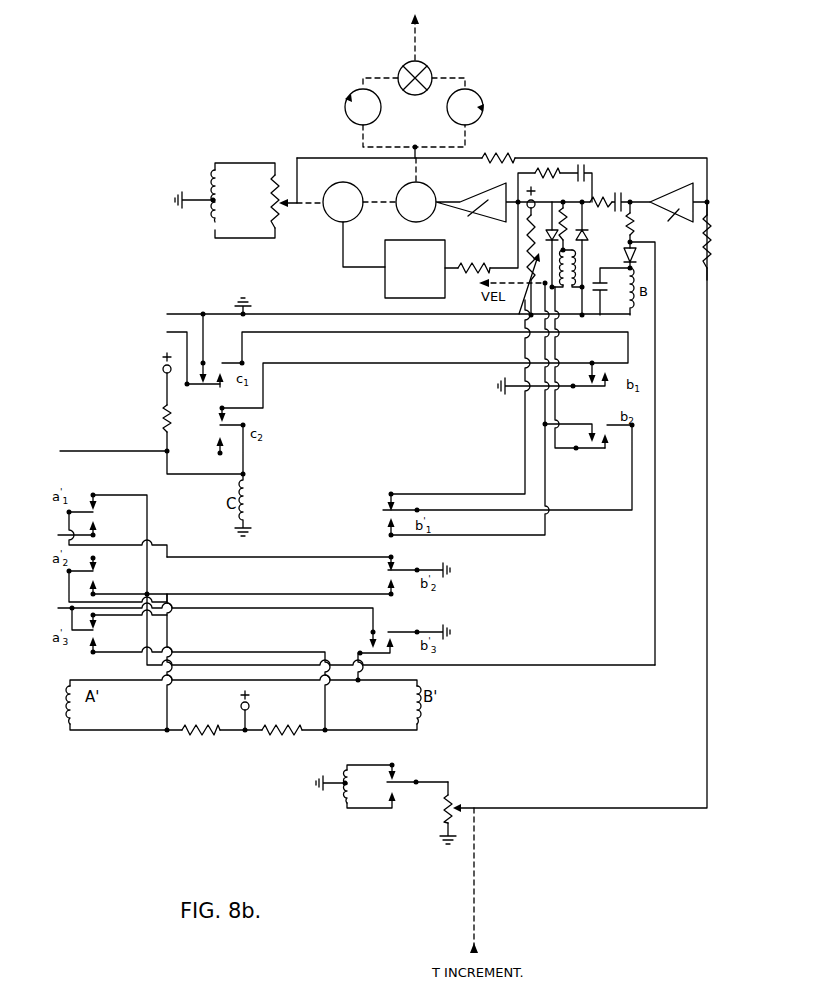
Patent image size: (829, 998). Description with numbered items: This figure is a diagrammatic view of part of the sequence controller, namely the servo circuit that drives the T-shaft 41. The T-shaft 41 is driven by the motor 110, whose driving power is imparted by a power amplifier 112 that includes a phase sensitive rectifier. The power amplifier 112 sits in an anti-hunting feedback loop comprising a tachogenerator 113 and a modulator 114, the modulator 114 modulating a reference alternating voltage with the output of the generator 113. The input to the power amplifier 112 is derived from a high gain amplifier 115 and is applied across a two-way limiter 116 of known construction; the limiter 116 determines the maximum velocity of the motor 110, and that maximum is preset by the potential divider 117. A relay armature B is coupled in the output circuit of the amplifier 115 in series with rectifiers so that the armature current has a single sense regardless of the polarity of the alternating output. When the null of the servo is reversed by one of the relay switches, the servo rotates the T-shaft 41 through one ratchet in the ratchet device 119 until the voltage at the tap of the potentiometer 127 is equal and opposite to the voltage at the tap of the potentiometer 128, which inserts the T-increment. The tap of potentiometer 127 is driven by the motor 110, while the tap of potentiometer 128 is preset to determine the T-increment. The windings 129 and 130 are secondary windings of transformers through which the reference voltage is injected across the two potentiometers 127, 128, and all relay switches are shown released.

The T-shaft 41 is at (418, 44).
The ratchet device 119 is at (524, 116).
The transformer secondary winding 129 is at (219, 190).
The potentiometer 127 is at (288, 211).
The tachogenerator 113 is at (357, 211).
The motor 110 is at (430, 191).
The power amplifier 112 is at (431, 213).
The modulator 114 is at (385, 251).
The high gain amplifier 115 is at (678, 212).
The two-way limiter 116 is at (578, 308).
The potential divider 117 is at (538, 291).
The potentiometer 128 is at (463, 806).
The transformer secondary winding 130 is at (353, 772).